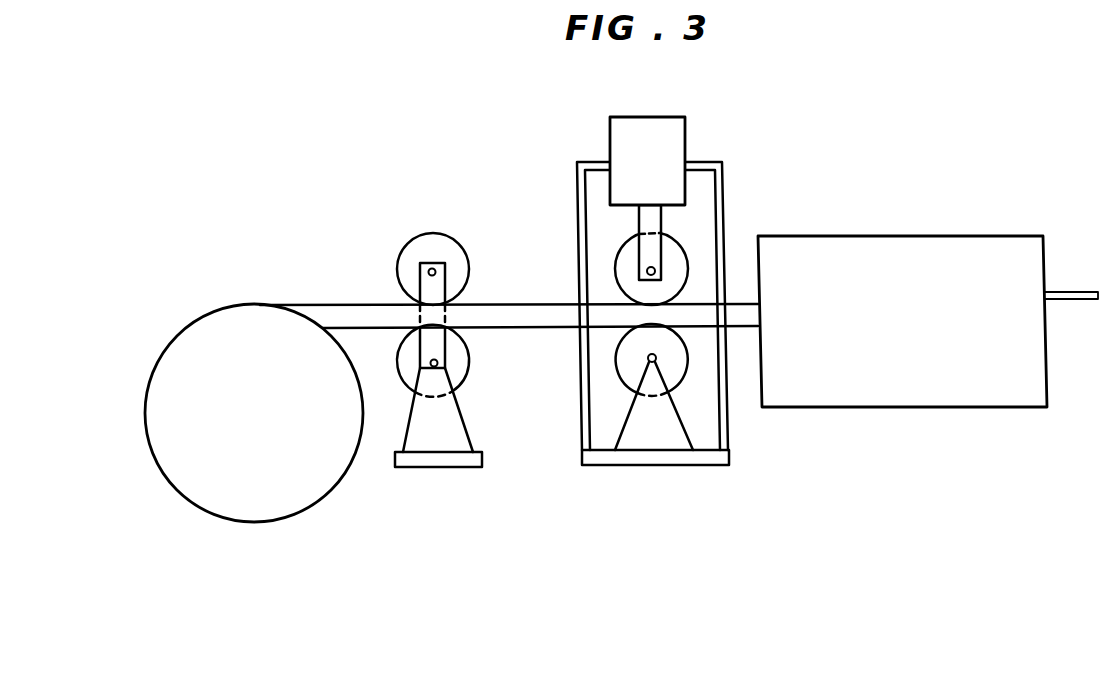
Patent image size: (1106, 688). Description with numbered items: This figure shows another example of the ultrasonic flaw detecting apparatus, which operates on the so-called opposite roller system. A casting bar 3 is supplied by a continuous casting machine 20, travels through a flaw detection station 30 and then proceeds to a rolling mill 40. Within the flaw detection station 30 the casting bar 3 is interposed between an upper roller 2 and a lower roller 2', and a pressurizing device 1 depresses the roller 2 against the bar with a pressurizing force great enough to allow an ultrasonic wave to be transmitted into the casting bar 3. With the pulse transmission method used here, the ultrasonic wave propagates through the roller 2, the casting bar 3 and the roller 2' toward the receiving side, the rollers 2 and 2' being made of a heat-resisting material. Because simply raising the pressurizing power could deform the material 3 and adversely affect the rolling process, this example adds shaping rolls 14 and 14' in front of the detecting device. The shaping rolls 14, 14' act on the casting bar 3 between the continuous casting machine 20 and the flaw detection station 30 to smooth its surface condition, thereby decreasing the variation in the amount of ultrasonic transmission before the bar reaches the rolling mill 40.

The pressurizing device 1 is at (676, 143).
The roller 2 is at (657, 256).
The roller 2' is at (662, 387).
The casting bar 3 is at (737, 312).
The shaping roll 14 is at (450, 253).
The shaping roll 14' is at (463, 365).
The continuous casting machine 20 is at (190, 333).
The flaw detection station 30 is at (733, 185).
The rolling mill 40 is at (905, 247).